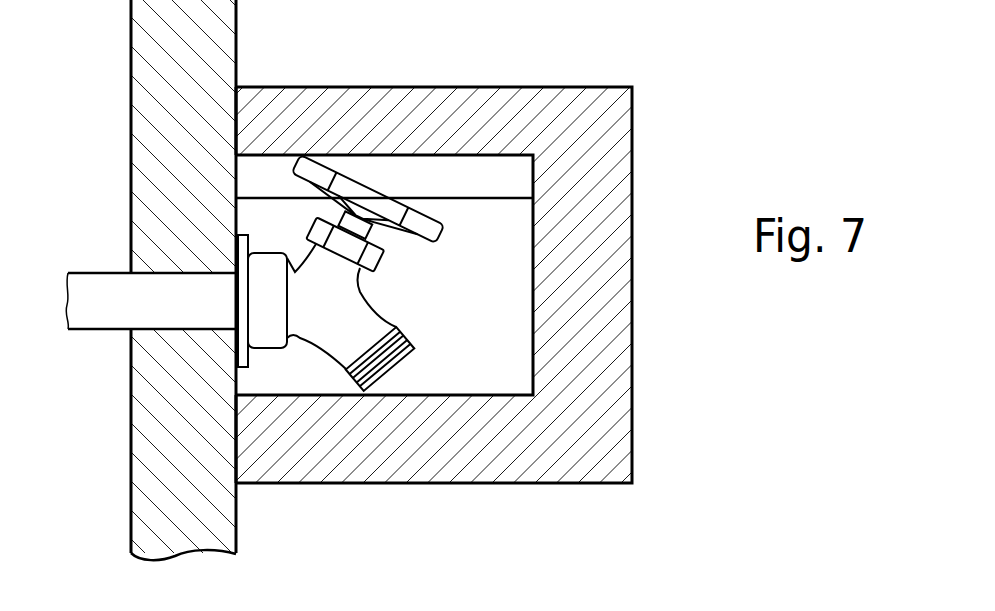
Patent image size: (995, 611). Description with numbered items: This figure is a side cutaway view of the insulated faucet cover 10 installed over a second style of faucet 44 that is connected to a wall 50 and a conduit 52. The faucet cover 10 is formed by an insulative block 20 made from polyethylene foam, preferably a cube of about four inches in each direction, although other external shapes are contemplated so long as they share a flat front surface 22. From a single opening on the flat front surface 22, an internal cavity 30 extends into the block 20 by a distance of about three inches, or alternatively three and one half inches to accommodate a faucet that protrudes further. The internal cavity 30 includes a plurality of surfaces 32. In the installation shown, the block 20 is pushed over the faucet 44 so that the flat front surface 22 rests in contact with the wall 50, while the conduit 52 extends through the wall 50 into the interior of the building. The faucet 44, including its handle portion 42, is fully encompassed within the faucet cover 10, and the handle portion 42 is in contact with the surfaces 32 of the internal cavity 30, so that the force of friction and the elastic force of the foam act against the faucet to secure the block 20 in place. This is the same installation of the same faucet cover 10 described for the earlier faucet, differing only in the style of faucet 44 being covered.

The insulated faucet cover 10 is at (710, 301).
The insulative block 20 is at (585, 393).
The flat front surface 22 is at (238, 121).
The internal cavity 30 is at (503, 252).
The surfaces 32 is at (453, 197).
The handle portion 42 is at (360, 178).
The faucet 44 is at (327, 322).
The wall 50 is at (173, 167).
The conduit 52 is at (102, 320).